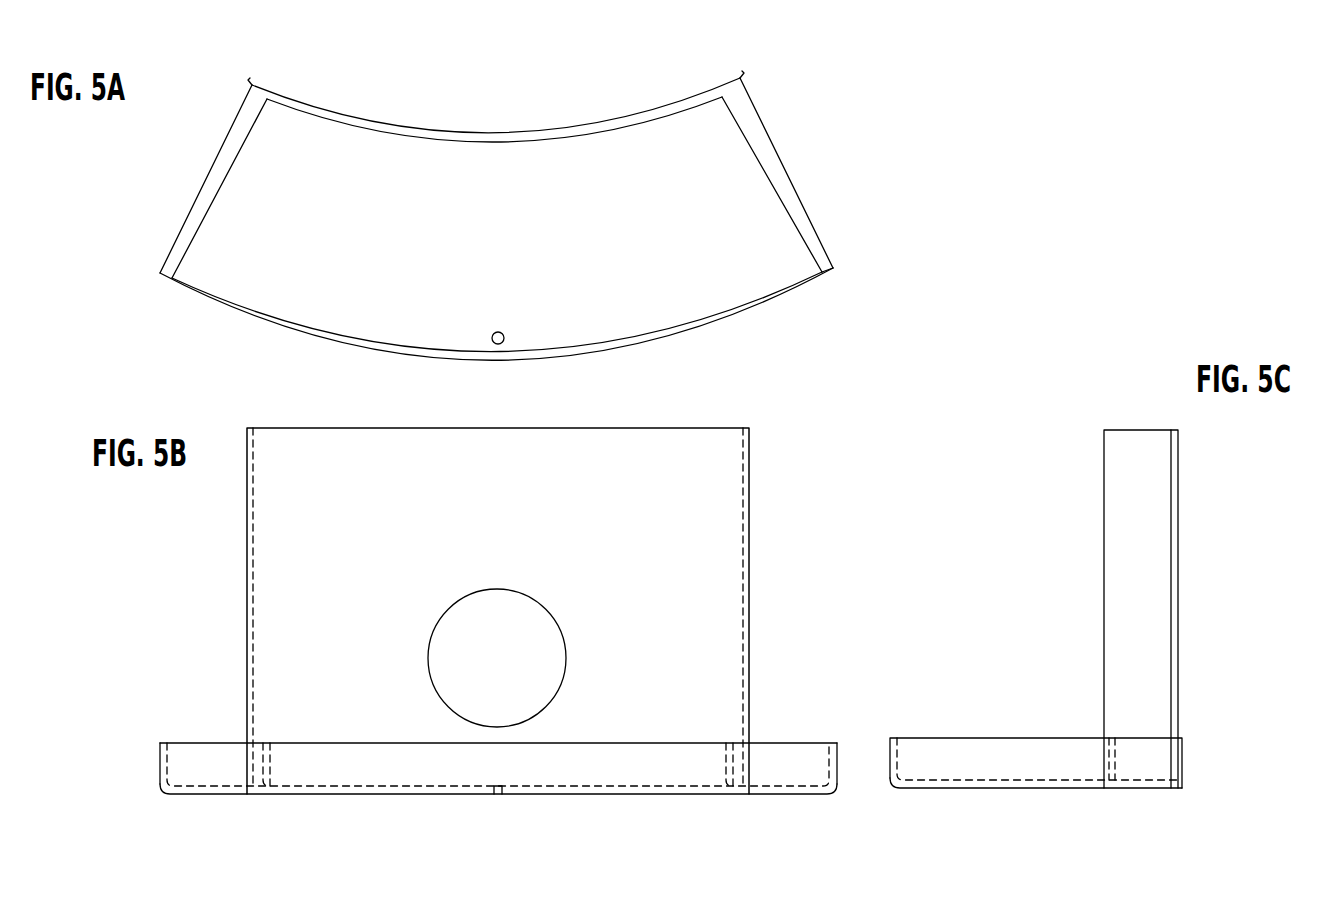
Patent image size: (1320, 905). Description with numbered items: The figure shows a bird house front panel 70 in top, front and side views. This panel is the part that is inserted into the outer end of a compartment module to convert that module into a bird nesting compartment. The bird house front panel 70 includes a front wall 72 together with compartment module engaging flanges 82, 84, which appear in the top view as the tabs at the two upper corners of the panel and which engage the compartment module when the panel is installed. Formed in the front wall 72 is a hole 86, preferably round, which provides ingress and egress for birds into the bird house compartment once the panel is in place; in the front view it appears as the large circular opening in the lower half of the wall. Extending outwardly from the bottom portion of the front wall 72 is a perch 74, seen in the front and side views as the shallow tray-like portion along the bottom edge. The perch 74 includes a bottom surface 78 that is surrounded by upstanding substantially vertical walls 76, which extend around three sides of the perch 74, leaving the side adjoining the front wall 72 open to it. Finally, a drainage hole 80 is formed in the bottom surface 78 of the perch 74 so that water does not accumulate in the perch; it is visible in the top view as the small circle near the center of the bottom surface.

In FIG. 5A, the bird house front panel 70 is at (535, 202).
In FIG. 5B, the bird house front panel 70 is at (509, 619).
In FIG. 5C, the bird house front panel 70 is at (1059, 609).
In FIG. 5A, the front wall 72 is at (388, 135).
In FIG. 5B, the front wall 72 is at (356, 582).
In FIG. 5C, the front wall 72 is at (1104, 555).
In FIG. 5A, the perch 74 is at (858, 272).
In FIG. 5B, the perch 74 is at (772, 812).
In FIG. 5C, the perch 74 is at (920, 810).
In FIG. 5A, the upstanding substantially vertical walls 76 is at (237, 314).
In FIG. 5B, the upstanding substantially vertical walls 76 is at (793, 743).
In FIG. 5C, the upstanding substantially vertical walls 76 is at (913, 738).
In FIG. 5A, the bottom surface 78 is at (658, 239).
In FIG. 5A, the drainage hole 80 is at (505, 338).
In FIG. 5A, the compartment module engaging flange 82 is at (740, 78).
In FIG. 5C, the compartment module engaging flange 82 is at (1178, 600).
In FIG. 5A, the compartment module engaging flange 84 is at (254, 84).
In FIG. 5B, the hole 86 is at (554, 618).